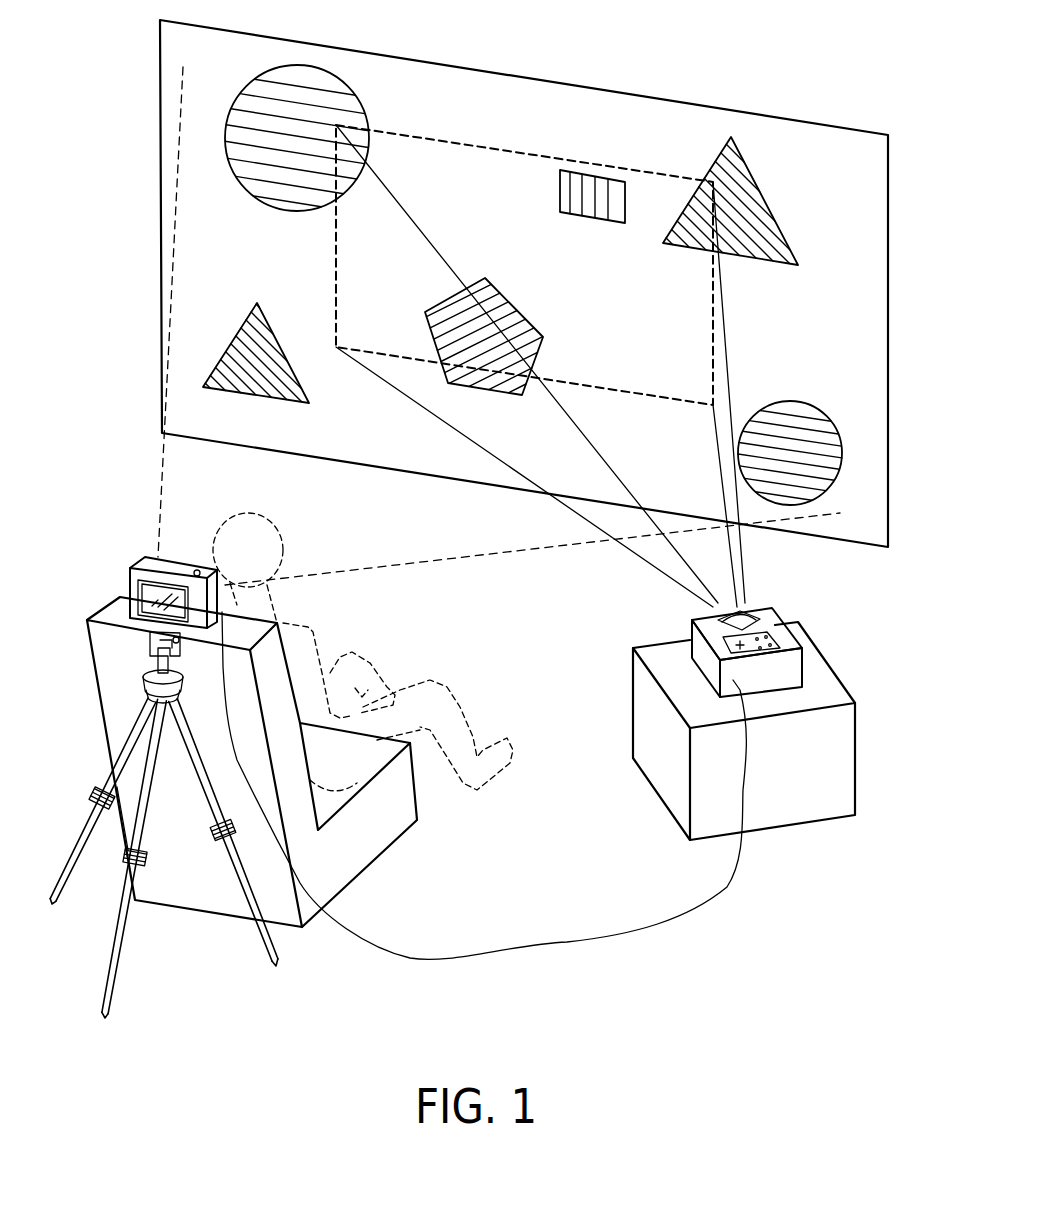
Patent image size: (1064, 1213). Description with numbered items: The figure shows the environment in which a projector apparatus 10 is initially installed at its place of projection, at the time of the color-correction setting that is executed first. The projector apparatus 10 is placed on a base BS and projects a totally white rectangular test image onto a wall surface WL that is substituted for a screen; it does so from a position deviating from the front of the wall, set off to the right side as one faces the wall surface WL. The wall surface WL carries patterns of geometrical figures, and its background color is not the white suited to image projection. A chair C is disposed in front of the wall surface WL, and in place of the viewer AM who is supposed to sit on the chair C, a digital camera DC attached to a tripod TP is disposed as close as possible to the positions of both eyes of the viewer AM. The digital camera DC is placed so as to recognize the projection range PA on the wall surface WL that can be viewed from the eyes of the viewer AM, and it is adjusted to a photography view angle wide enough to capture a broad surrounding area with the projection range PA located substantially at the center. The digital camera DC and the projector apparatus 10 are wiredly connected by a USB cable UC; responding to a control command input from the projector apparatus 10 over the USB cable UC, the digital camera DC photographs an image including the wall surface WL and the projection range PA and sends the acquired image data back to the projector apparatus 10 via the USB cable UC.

The wall surface WL is at (837, 123).
The projection range PA is at (647, 172).
The projector apparatus 10 is at (763, 608).
The base BS is at (828, 663).
The USB cable UC is at (593, 937).
The chair C is at (372, 838).
The viewer AM is at (306, 626).
The digital camera DC is at (131, 568).
The tripod TP is at (153, 813).